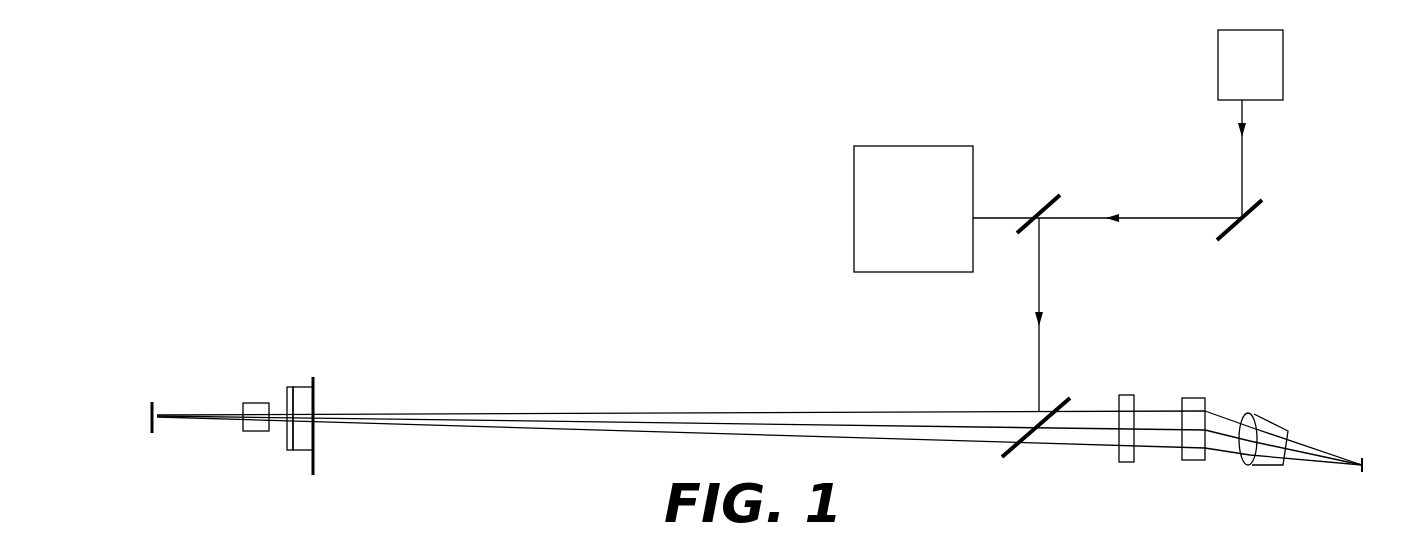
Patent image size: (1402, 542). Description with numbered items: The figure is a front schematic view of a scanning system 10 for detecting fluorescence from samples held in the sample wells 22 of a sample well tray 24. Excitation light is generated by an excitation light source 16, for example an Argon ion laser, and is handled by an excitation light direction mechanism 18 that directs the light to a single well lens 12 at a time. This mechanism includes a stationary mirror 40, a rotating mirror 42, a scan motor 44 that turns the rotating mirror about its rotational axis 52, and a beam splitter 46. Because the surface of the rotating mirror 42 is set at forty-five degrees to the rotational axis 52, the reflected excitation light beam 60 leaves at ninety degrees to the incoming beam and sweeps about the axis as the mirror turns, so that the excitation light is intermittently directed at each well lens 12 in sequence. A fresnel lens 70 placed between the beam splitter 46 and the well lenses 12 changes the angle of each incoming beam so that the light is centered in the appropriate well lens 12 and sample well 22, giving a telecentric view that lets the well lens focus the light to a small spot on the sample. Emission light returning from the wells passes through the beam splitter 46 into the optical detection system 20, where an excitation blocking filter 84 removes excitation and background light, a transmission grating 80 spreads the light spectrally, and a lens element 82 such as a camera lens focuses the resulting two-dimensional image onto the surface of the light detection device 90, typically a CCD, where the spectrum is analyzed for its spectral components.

The scanning system 10 is at (598, 290).
The well lens 12 is at (252, 403).
The excitation light source 16 is at (1308, 64).
The excitation light direction mechanism 18 is at (1035, 119).
The optical detection system 20 is at (1270, 378).
The sample well 22 is at (681, 476).
The sample well tray 24 is at (141, 390).
The stationary mirror 40 is at (1255, 214).
The rotating mirror 42 is at (1046, 193).
The scan motor 44 is at (916, 150).
The beam splitter 46 is at (1063, 397).
The rotational axis 52 is at (990, 220).
The excitation light beam 60 is at (1040, 268).
The fresnel lens 70 is at (295, 390).
The transmission grating 80 is at (1187, 460).
The lens element 82 is at (1262, 465).
The excitation blocking filter 84 is at (1125, 462).
The light detection device 90 is at (1362, 457).